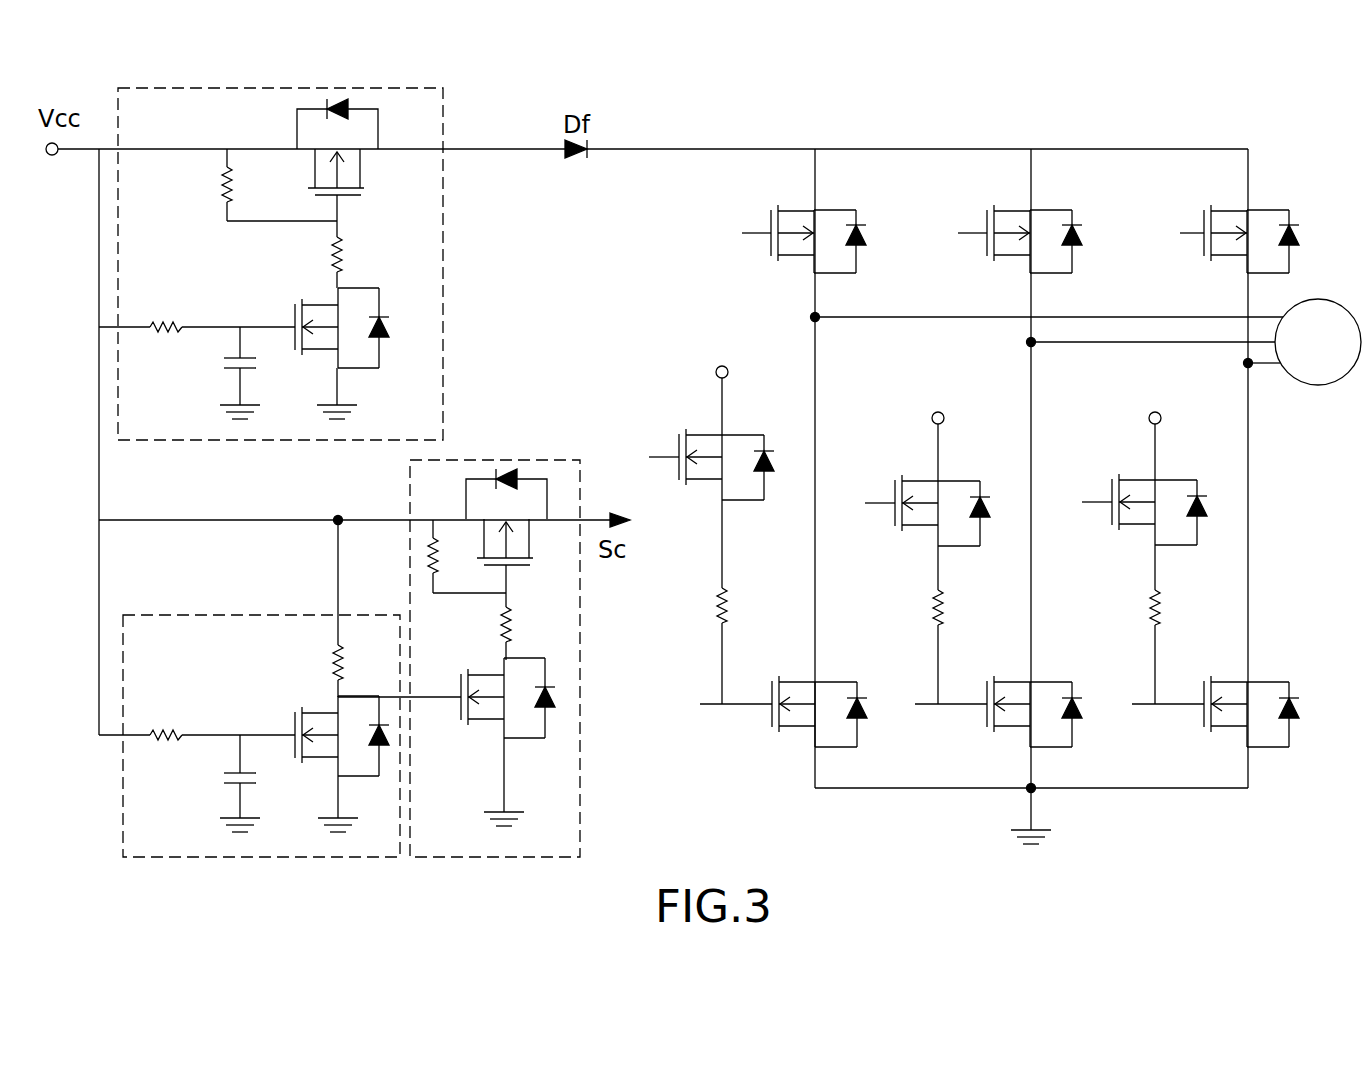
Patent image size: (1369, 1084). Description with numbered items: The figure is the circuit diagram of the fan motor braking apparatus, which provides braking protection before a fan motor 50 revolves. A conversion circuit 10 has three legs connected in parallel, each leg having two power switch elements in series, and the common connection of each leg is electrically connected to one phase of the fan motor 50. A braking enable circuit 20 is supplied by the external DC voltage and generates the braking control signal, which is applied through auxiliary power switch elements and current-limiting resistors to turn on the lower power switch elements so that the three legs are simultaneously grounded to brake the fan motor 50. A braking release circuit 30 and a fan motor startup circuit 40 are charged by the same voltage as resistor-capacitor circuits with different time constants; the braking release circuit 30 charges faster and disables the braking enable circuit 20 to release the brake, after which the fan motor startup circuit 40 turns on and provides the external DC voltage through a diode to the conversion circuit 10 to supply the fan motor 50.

The conversion circuit 10 is at (1262, 164).
The braking enable circuit 20 is at (563, 780).
The braking release circuit 30 is at (138, 775).
The fan motor startup circuit 40 is at (128, 257).
The fan motor 50 is at (1318, 307).